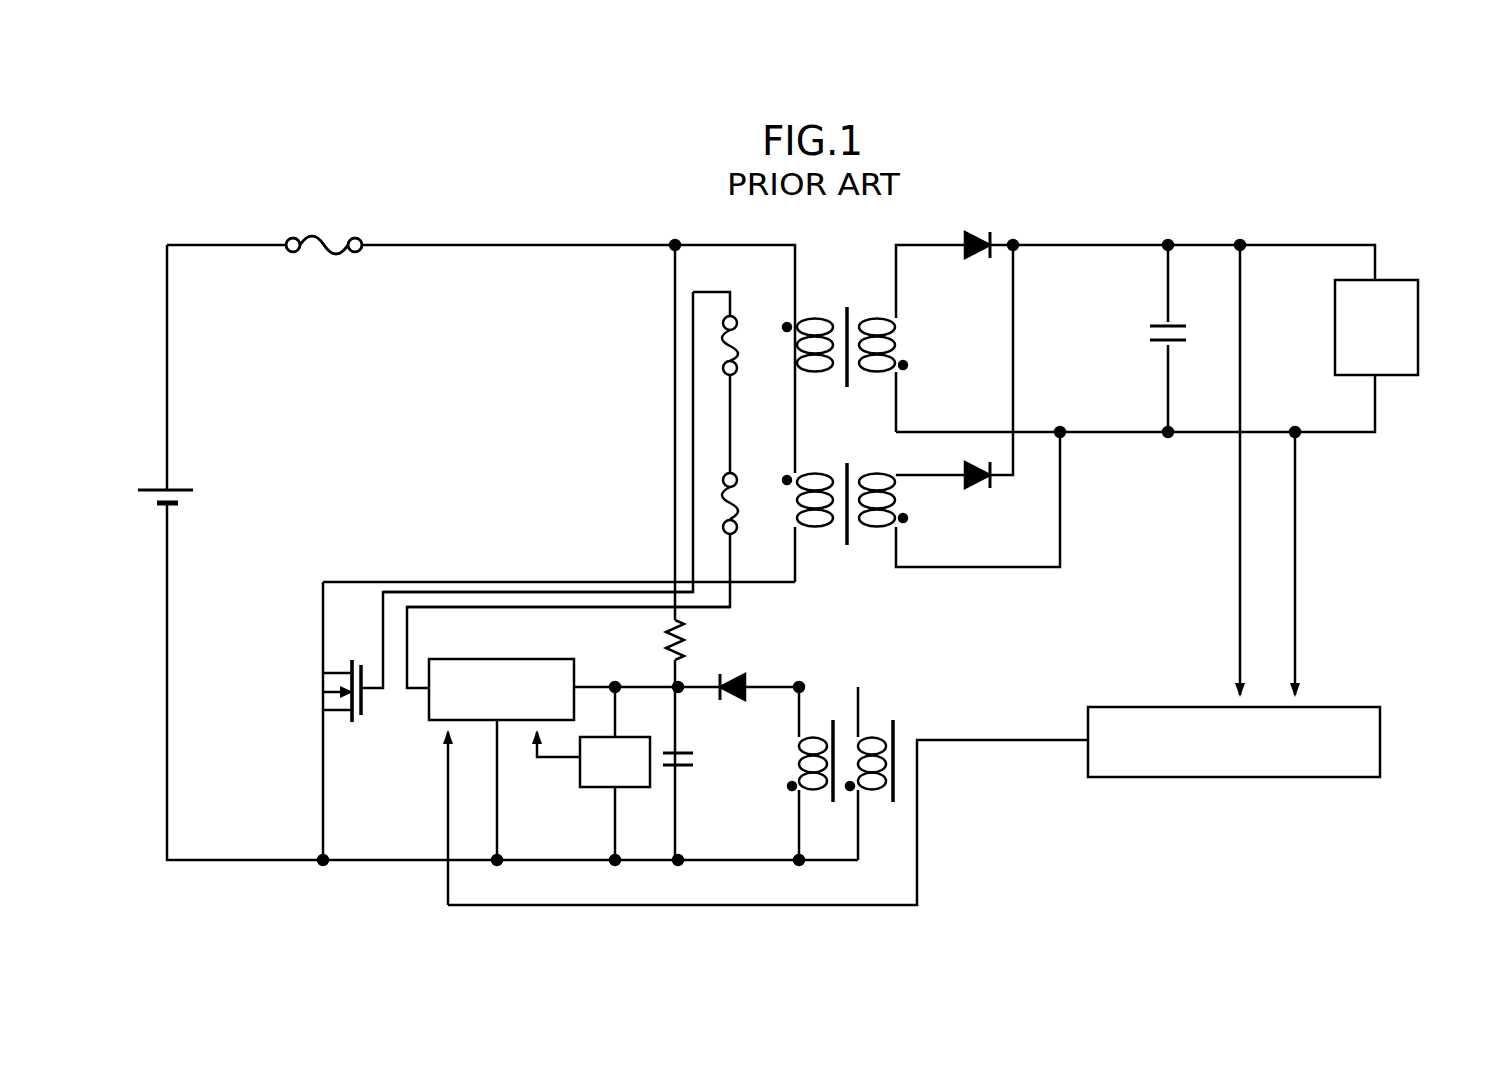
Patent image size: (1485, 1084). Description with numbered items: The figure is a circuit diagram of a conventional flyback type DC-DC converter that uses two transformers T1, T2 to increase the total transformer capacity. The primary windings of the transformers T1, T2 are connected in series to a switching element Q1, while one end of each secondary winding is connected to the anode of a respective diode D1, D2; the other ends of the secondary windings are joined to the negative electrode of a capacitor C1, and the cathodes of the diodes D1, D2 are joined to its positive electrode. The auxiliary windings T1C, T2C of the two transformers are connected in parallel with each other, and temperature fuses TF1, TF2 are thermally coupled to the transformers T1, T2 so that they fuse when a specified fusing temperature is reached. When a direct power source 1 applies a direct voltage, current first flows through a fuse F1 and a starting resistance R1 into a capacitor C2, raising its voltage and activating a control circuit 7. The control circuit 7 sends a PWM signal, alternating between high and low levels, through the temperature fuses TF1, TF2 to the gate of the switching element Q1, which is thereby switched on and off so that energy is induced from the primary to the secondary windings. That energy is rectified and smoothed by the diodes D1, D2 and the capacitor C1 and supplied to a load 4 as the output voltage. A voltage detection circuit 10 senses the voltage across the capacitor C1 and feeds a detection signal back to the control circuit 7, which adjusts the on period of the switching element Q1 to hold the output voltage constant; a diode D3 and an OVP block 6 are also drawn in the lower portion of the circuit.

The direct power source 1 is at (187, 500).
The load 4 is at (1420, 310).
The OVP (overvoltage protection) circuit 6 is at (578, 780).
The control circuit 7 is at (574, 670).
The voltage detection circuit 10 is at (1165, 705).
The fuse F1 is at (324, 233).
The switching element Q1 is at (319, 721).
The starting resistance R1 is at (693, 640).
The capacitor C1 is at (1150, 338).
The capacitor C2 is at (698, 764).
The diode D1 is at (979, 230).
The diode D2 is at (979, 491).
The diode D3 is at (733, 704).
The transformer T1 is at (839, 305).
The transformer T2 is at (839, 470).
The temperature fuse TF1 is at (742, 345).
The temperature fuse TF2 is at (742, 506).
The auxiliary winding T1C is at (812, 795).
The auxiliary winding T2C is at (878, 725).